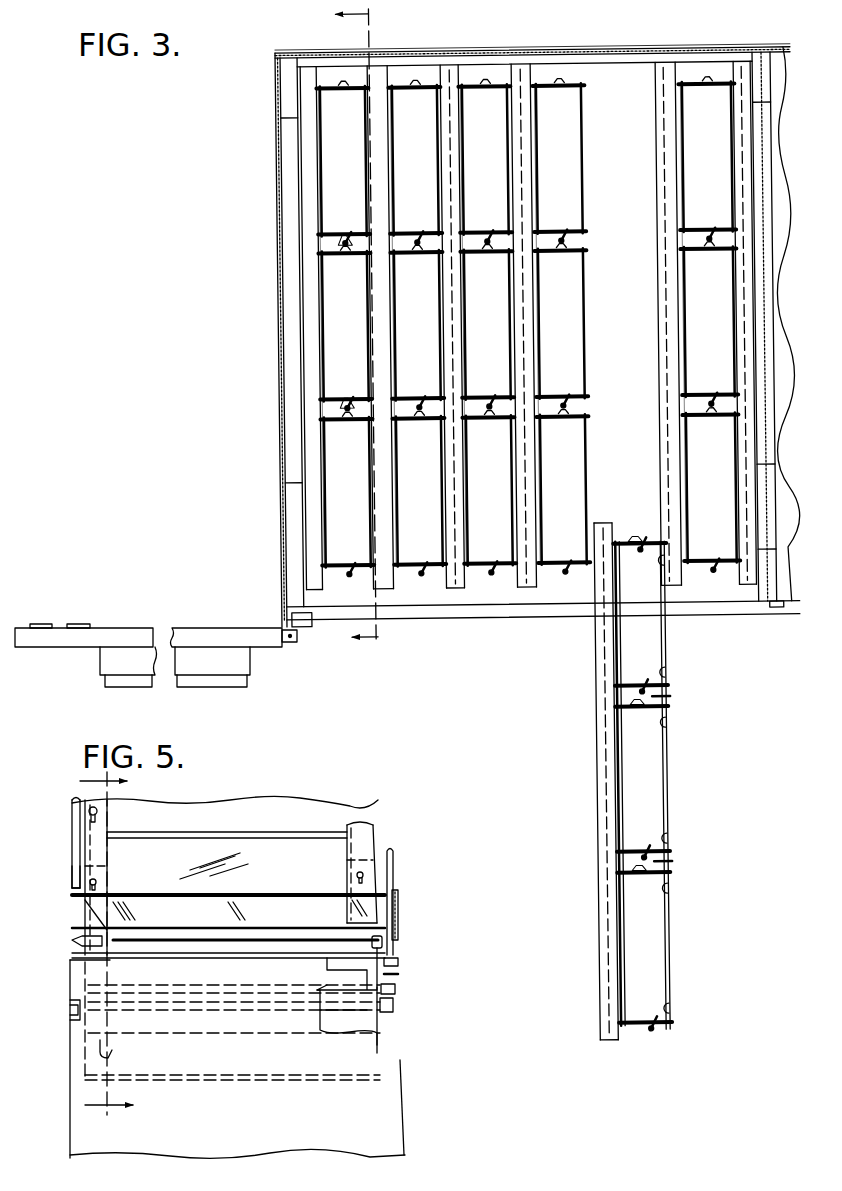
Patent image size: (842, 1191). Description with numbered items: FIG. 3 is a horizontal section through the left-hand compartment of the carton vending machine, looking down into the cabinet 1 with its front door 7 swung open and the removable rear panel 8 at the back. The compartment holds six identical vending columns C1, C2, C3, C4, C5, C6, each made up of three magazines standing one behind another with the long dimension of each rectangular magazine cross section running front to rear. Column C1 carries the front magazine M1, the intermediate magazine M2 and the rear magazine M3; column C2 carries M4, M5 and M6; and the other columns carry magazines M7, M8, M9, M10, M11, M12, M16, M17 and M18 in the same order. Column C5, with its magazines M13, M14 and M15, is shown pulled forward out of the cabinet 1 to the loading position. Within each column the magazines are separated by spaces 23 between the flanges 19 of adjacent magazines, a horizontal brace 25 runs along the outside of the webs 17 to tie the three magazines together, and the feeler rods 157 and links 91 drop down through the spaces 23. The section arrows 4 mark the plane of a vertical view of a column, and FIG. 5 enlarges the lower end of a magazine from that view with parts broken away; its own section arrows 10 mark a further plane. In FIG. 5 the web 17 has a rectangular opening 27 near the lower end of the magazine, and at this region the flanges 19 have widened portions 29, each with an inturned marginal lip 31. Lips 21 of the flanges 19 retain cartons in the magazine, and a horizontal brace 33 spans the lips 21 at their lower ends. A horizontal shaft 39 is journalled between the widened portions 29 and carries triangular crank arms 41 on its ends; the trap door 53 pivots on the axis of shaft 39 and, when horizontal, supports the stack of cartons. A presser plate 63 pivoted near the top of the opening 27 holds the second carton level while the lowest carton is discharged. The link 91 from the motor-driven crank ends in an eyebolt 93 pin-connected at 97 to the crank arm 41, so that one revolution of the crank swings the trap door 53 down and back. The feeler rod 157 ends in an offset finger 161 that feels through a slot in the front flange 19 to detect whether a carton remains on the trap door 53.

In FIG. 3, the cabinet 1 is at (276, 140).
In FIG. 3, the section line 4- 4 is at (364, 331).
In FIG. 3, the front door 7 is at (130, 628).
In FIG. 3, the removable rear panel 8 is at (605, 50).
In FIG. 5, the section line 10- 10 is at (95, 954).
In FIG. 3, the web 17 is at (615, 665).
In FIG. 5, the web 17 is at (262, 799).
In FIG. 3, the flange 19 is at (623, 542).
In FIG. 3, the lip 21 is at (660, 565).
In FIG. 5, the lip 21 is at (84, 803).
In FIG. 3, the space 23 is at (668, 698).
In FIG. 3, the horizontal brace 25 is at (298, 589).
In FIG. 5, the opening 27 is at (270, 831).
In FIG. 5, the widened portion 29 is at (386, 1034).
In FIG. 5, the inturned marginal lip 31 is at (112, 1052).
In FIG. 3, the horizontal brace 33 is at (665, 625).
In FIG. 5, the horizontal brace 33 is at (265, 906).
In FIG. 5, the horizontal shaft 39 is at (393, 1006).
In FIG. 5, the crank arm 41 is at (399, 963).
In FIG. 5, the trap door 53 is at (396, 990).
In FIG. 5, the presser plate 63 is at (175, 845).
In FIG. 3, the link 91 is at (337, 251).
In FIG. 5, the link 91 is at (394, 864).
In FIG. 5, the eyebolt 93 is at (399, 905).
In FIG. 5, the pin connection 97 is at (399, 974).
In FIG. 3, the feeler rod 157 is at (337, 246).
In FIG. 5, the feeler rod 157 is at (73, 840).
In FIG. 5, the offset finger 161 is at (100, 939).
In FIG. 3, the vending column C1 is at (331, 578).
In FIG. 3, the vending column C2 is at (434, 578).
In FIG. 3, the vending column C3 is at (479, 578).
In FIG. 3, the vending column C4 is at (555, 578).
In FIG. 3, the vending column C5 is at (626, 1035).
In FIG. 3, the vending column C6 is at (721, 568).
In FIG. 3, the magazine M1 is at (347, 494).
In FIG. 3, the magazine M2 is at (345, 328).
In FIG. 3, the magazine M3 is at (343, 163).
In FIG. 3, the magazine M4 is at (419, 493).
In FIG. 3, the magazine M5 is at (417, 327).
In FIG. 3, the magazine M6 is at (415, 162).
In FIG. 3, the magazine M7 is at (489, 492).
In FIG. 3, the magazine M8 is at (487, 326).
In FIG. 3, the magazine M9 is at (485, 161).
In FIG. 3, the magazine M10 is at (563, 491).
In FIG. 3, the magazine M11 is at (561, 325).
In FIG. 3, the magazine M12 is at (559, 160).
In FIG. 3, the magazine M13 is at (644, 947).
In FIG. 3, the magazine M14 is at (642, 778).
In FIG. 3, the magazine M15 is at (640, 614).
In FIG. 3, the magazine M16 is at (711, 489).
In FIG. 3, the magazine M17 is at (709, 323).
In FIG. 3, the magazine M18 is at (707, 158).